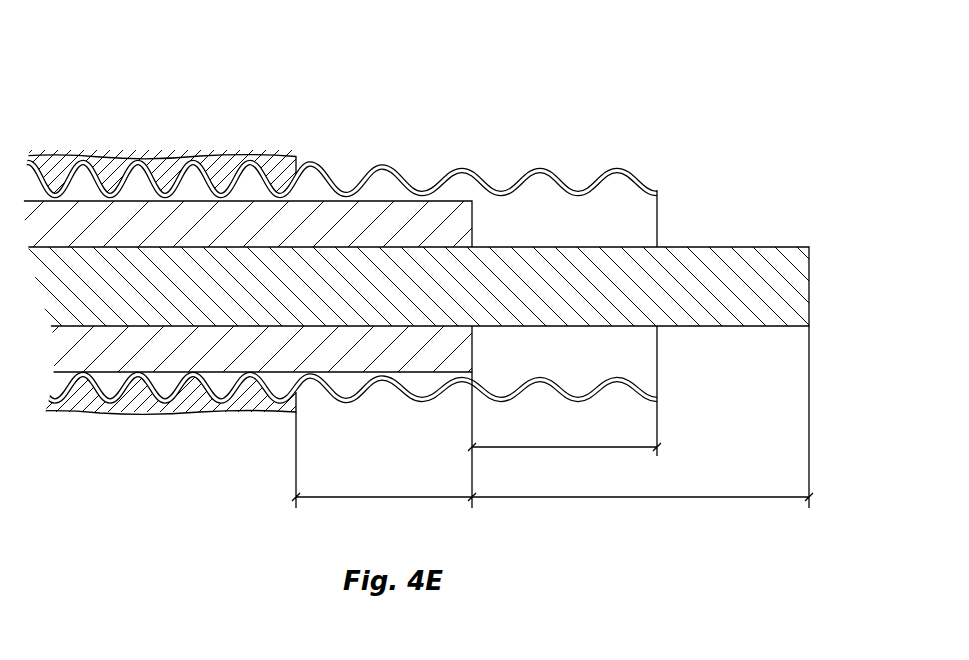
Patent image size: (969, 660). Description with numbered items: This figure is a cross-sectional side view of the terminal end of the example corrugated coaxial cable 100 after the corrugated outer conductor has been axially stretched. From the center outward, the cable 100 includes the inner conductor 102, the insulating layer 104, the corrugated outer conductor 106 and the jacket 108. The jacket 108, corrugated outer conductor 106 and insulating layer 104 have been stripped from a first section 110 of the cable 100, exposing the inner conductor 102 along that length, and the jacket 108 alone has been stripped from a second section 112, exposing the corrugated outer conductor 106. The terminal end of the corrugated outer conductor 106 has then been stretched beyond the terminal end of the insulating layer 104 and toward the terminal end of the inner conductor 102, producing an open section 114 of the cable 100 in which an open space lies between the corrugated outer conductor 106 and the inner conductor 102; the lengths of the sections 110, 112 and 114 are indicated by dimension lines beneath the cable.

The corrugated coaxial cable 100 is at (664, 88).
The inner conductor 102 is at (772, 247).
The insulating layer 104 is at (385, 212).
The corrugated outer conductor 106 is at (310, 166).
The jacket 108 is at (143, 156).
The first section 110 is at (557, 497).
The second section 112 is at (377, 497).
The open section 114 is at (557, 447).